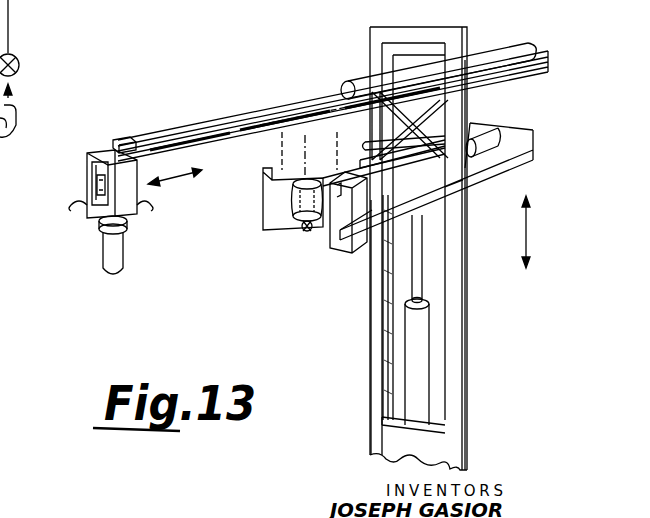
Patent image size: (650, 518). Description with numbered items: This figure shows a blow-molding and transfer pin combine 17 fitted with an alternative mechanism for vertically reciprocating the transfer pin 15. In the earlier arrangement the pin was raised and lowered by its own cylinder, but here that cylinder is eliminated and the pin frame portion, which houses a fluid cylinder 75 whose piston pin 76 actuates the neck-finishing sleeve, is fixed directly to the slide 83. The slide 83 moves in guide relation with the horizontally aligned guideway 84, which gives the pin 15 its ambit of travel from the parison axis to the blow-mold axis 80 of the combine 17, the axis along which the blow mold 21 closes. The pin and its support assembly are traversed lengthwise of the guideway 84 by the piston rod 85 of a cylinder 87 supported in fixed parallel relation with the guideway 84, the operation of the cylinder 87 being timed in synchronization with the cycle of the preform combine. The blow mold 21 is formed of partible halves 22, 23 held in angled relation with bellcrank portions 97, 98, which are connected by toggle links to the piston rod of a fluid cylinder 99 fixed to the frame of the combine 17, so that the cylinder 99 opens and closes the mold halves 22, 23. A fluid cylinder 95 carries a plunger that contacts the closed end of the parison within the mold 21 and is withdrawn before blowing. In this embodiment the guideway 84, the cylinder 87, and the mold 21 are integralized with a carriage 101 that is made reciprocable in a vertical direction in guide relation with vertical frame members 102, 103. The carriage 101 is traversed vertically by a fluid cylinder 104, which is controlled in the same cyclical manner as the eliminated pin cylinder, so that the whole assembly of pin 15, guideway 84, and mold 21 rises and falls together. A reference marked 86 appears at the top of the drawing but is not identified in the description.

The transfer pin 15 is at (92, 231).
The blow-molding combine 17 is at (482, 28).
The blow mold 21 is at (255, 211).
The partible mold half 22 is at (266, 170).
The partible mold half 23 is at (341, 250).
The fluid cylinder 75 is at (96, 178).
The piston pin 76 is at (100, 188).
The blow-mold axis 80 is at (307, 243).
The slide 83 is at (166, 134).
The guideway 84 is at (336, 88).
The piston rod 85 is at (200, 123).
The rail portion 86 is at (293, 5).
The cylinder 87 is at (350, 83).
The fluid cylinder 95 is at (300, 232).
The bellcrank portion 97 is at (354, 166).
The bellcrank portion 98 is at (396, 180).
The fluid cylinder 99 is at (486, 140).
The carriage 101 is at (513, 232).
The vertical frame member 102 is at (376, 343).
The vertical frame member 103 is at (461, 363).
The fluid cylinder 104 is at (420, 405).